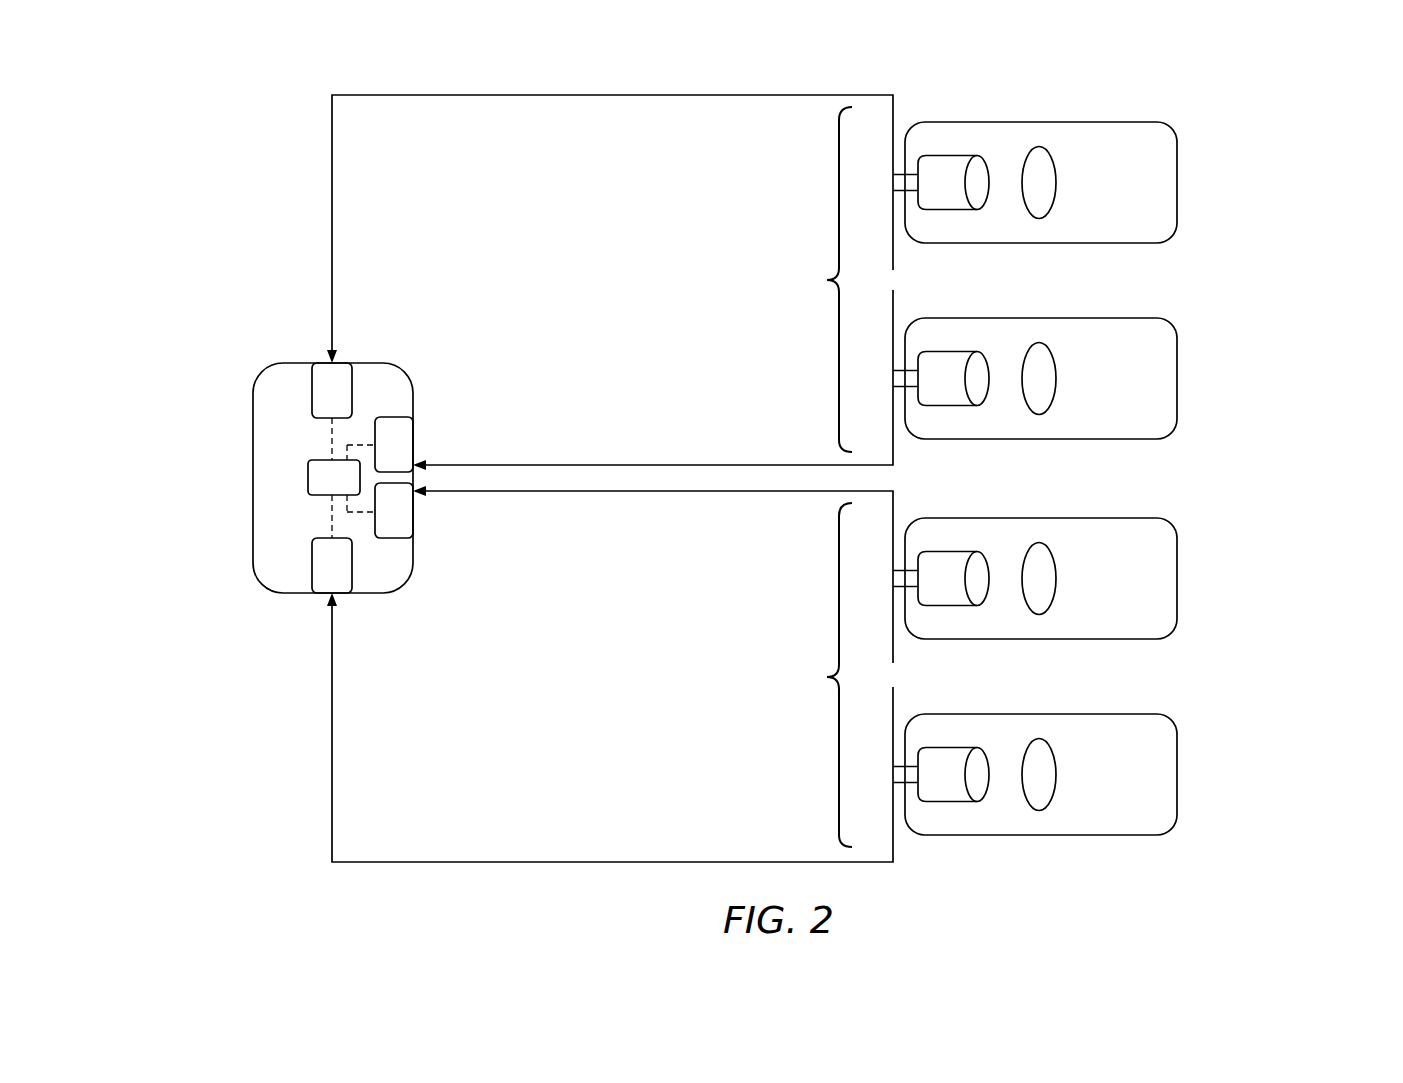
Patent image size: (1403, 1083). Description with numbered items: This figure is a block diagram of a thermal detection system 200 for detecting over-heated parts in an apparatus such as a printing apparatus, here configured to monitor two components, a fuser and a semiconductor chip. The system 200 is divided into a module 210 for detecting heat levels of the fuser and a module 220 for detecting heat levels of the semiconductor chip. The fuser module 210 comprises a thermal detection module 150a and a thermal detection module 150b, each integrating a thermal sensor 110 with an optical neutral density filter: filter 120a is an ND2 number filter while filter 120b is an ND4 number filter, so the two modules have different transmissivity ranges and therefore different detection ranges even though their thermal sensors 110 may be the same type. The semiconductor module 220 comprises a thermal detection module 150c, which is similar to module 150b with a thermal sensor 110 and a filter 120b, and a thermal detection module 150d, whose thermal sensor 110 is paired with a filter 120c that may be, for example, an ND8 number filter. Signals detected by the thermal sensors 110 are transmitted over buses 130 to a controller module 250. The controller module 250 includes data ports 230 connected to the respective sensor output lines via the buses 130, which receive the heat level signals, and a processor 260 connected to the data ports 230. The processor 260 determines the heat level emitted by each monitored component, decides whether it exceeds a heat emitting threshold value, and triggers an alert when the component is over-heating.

The thermal detection system 200 is at (1045, 50).
The bus 130 is at (735, 93).
The module for detecting heat levels of the fuser 210 is at (798, 236).
The module for detecting heat levels of the semiconductor chip 220 is at (798, 624).
The thermal detection module 150a is at (1173, 119).
The thermal detection module 150b is at (1173, 315).
The thermal detection module 150c is at (1173, 515).
The thermal detection module 150d is at (1173, 711).
The thermal sensor 110 is at (953, 155).
The filter 120a is at (1040, 146).
The filter 120b is at (1040, 342).
The filter 120c is at (1040, 738).
The controller module 250 is at (405, 357).
The data port 230 is at (338, 363).
The processor 260 is at (308, 472).